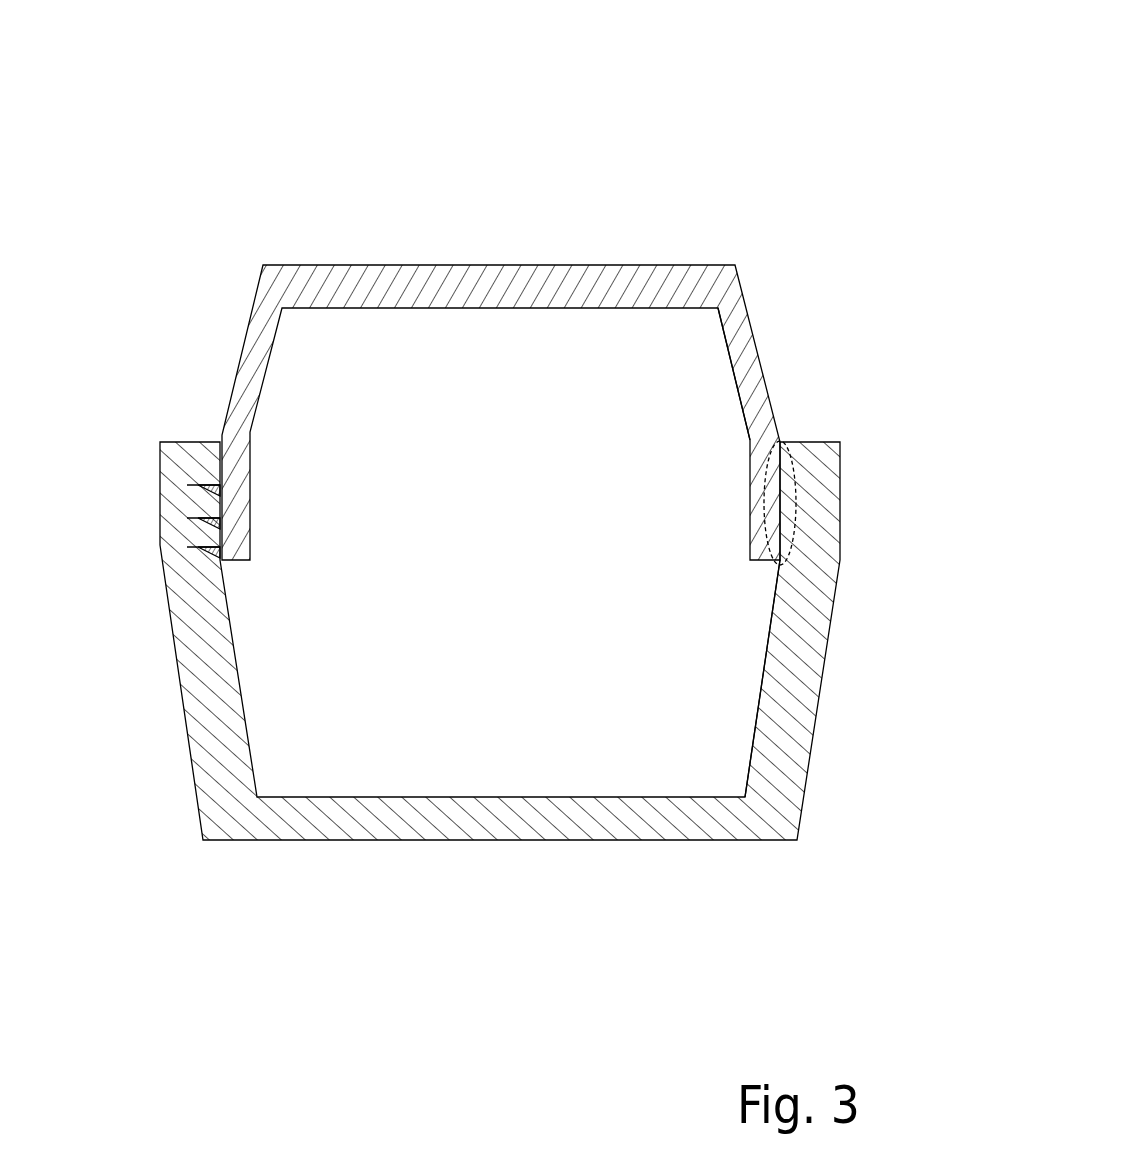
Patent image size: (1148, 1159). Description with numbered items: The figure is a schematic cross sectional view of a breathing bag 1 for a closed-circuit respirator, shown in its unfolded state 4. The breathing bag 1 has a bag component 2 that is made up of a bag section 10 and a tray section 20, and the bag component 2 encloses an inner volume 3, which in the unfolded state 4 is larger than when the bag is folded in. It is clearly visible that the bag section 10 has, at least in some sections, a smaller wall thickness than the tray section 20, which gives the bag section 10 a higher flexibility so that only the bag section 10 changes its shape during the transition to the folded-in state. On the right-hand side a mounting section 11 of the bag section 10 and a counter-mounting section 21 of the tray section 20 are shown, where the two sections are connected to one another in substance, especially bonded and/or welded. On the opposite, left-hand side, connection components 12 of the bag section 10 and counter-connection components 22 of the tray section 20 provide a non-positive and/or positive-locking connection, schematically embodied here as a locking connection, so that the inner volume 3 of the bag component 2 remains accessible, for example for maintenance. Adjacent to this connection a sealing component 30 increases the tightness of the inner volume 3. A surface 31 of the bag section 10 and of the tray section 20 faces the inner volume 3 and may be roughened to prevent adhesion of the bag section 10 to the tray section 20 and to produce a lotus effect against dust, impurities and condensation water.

The breathing bag 1 is at (752, 122).
The unfolded state 4 is at (502, 551).
The bag component 2 is at (502, 551).
The bag section 10 is at (267, 318).
The tray section 20 is at (211, 712).
The inner volume 3 is at (498, 572).
The sealing component 30 is at (213, 468).
The surface 31 is at (737, 400).
The mounting section 11 is at (863, 503).
The counter-mounting section 21 is at (797, 500).
The connection components 12 is at (131, 545).
The counter-connection components 22 is at (196, 488).